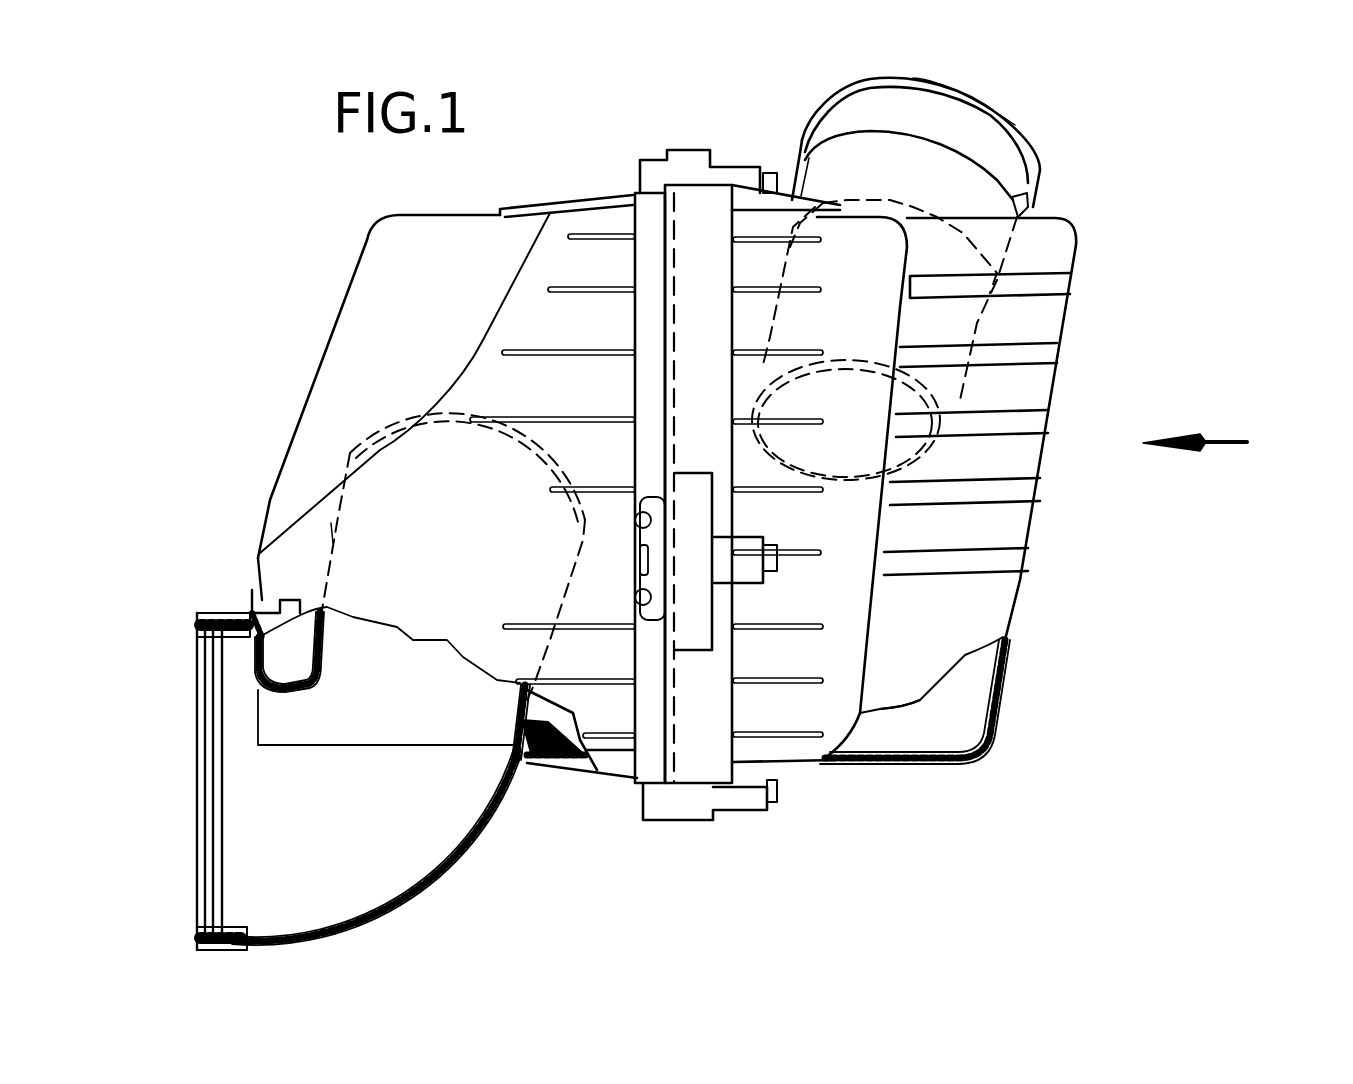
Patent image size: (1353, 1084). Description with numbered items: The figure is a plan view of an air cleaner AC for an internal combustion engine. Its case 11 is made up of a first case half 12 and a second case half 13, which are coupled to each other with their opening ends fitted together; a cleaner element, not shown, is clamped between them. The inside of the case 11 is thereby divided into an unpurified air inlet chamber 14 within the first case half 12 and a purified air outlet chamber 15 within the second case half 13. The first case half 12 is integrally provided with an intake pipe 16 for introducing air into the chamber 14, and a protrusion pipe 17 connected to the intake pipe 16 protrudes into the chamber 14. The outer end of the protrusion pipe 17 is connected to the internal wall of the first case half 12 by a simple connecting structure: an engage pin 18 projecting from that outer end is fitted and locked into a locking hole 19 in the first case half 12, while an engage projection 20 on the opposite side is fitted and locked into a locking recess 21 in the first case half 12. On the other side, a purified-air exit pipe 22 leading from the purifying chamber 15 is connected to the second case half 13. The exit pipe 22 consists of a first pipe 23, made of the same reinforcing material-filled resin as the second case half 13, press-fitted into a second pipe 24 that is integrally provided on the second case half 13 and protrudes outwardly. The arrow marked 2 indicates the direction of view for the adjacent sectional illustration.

The air flow direction arrow 2 is at (1210, 439).
The case 11 is at (714, 112).
The first case half 12 is at (594, 222).
The second case half 13 is at (753, 223).
The unpurified air inlet chamber 14 is at (577, 735).
The purified air outlet chamber 15 is at (964, 721).
The intake pipe 16 is at (481, 848).
The protrusion pipe 17 is at (333, 543).
The engage pin 18 is at (525, 770).
The locking hole 19 is at (555, 740).
The engage projection 20 is at (258, 560).
The locking recess 21 is at (265, 636).
The purified-air exit pipe 22 is at (1045, 158).
The first pipe 23 is at (998, 327).
The second pipe 24 is at (998, 152).
The air cleaner AC is at (962, 755).